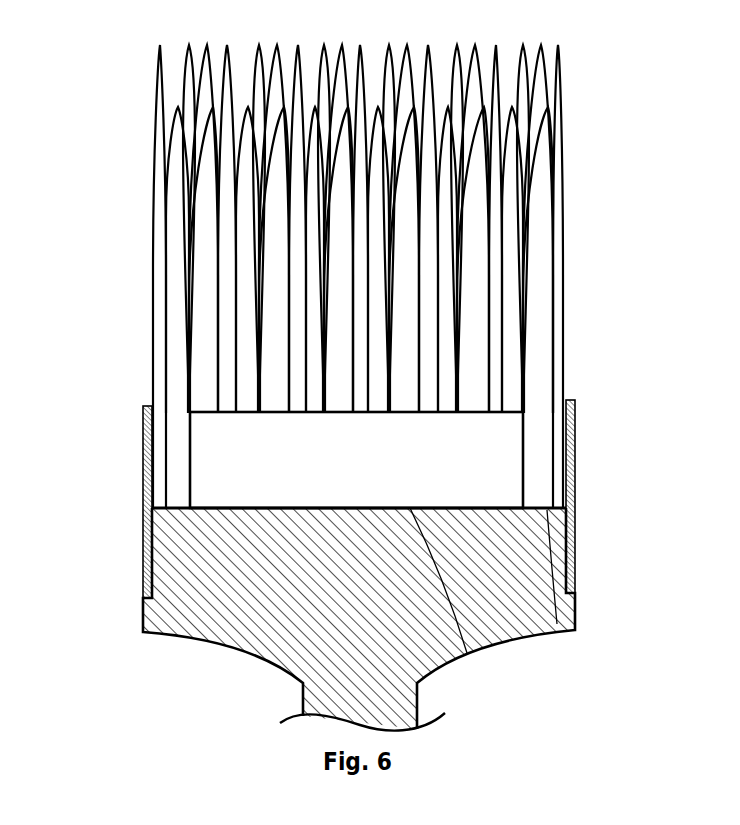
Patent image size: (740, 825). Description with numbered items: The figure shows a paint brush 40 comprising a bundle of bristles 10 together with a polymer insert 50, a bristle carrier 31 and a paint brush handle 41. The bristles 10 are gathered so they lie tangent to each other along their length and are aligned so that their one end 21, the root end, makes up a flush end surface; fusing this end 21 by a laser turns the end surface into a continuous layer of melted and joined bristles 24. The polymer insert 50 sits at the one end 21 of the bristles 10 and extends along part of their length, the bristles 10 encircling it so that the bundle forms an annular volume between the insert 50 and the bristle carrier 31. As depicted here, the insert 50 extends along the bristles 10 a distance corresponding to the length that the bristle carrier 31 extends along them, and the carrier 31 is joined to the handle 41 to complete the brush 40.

The paint brush 40 is at (81, 298).
The bristles 10 is at (550, 142).
The polymer insert 50 is at (500, 425).
The bristle carrier 31 is at (573, 450).
The paint brush handle 41 is at (212, 632).
The one end of the bristles 21 is at (457, 655).
The continuous layer of melted and joined bristles 24 is at (562, 630).